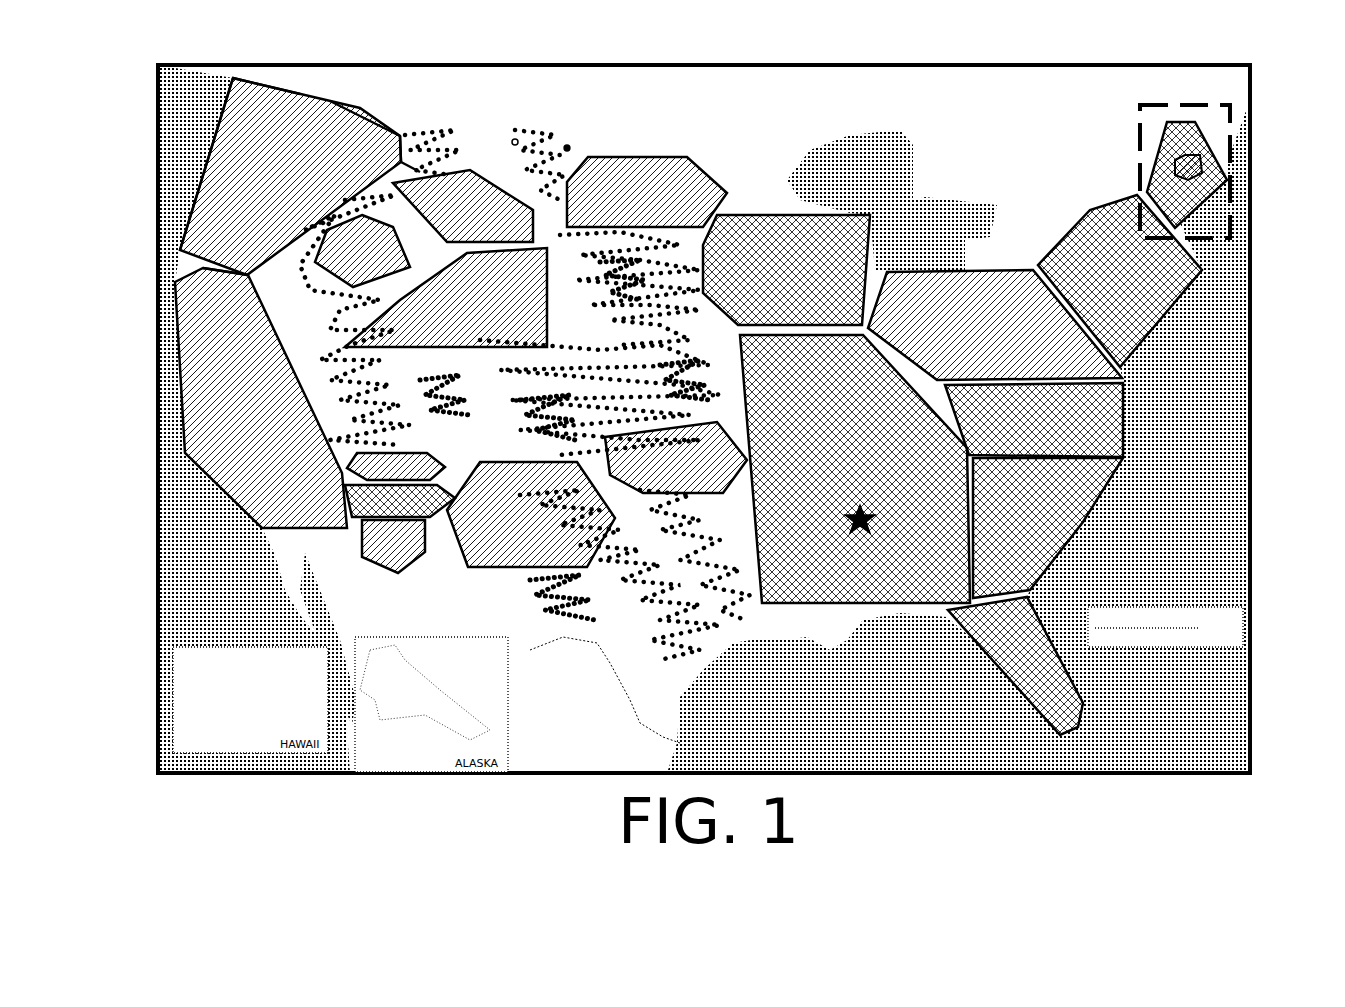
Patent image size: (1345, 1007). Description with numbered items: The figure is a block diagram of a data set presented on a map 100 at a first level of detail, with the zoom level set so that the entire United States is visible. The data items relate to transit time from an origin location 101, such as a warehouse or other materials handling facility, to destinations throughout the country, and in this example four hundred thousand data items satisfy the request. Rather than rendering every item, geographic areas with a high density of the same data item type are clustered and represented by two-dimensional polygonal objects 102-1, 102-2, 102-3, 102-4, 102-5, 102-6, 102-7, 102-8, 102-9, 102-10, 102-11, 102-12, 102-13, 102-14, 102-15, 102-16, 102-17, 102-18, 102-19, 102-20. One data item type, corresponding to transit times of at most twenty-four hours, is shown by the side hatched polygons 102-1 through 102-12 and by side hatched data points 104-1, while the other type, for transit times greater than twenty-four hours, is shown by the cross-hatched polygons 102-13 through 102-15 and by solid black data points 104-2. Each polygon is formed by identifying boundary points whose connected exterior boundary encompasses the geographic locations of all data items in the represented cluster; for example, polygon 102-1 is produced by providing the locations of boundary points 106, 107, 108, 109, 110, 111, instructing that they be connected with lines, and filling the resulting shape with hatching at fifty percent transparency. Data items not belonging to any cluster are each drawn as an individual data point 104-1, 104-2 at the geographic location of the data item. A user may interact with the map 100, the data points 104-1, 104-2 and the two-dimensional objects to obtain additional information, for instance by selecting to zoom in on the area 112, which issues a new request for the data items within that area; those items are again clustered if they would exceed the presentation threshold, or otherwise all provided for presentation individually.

The map 100 is at (1080, 770).
The origin location 101 is at (853, 527).
The two-dimensional object 102-1 is at (264, 188).
The two-dimensional object 102-2 is at (235, 407).
The two-dimensional object 102-3 is at (337, 260).
The two-dimensional object 102-4 is at (436, 217).
The two-dimensional object 102-5 is at (419, 308).
The two-dimensional object 102-6 is at (620, 201).
The two-dimensional object 102-7 is at (367, 478).
The two-dimensional object 102-8 is at (369, 555).
The two-dimensional object 102-9 is at (505, 524).
The two-dimensional object 102-10 is at (645, 468).
The two-dimensional object 102-11 is at (968, 335).
The two-dimensional object 102-12 is at (1203, 163).
The two-dimensional object 102-13 is at (369, 510).
The two-dimensional object 102-14 is at (756, 276).
The two-dimensional object 102-15 is at (822, 476).
The two-dimensional object 102-16 is at (1086, 287).
The two-dimensional object 102-17 is at (1003, 428).
The two-dimensional object 102-18 is at (1015, 538).
The two-dimensional object 102-19 is at (985, 676).
The two-dimensional object 102-20 is at (1215, 195).
The data point 104-1 is at (567, 148).
The data point 104-2 is at (515, 142).
The boundary point 106 is at (233, 78).
The boundary point 107 is at (360, 110).
The boundary point 108 is at (405, 160).
The boundary point 109 is at (417, 160).
The boundary point 110 is at (247, 276).
The boundary point 111 is at (180, 250).
The area 112 is at (1207, 105).